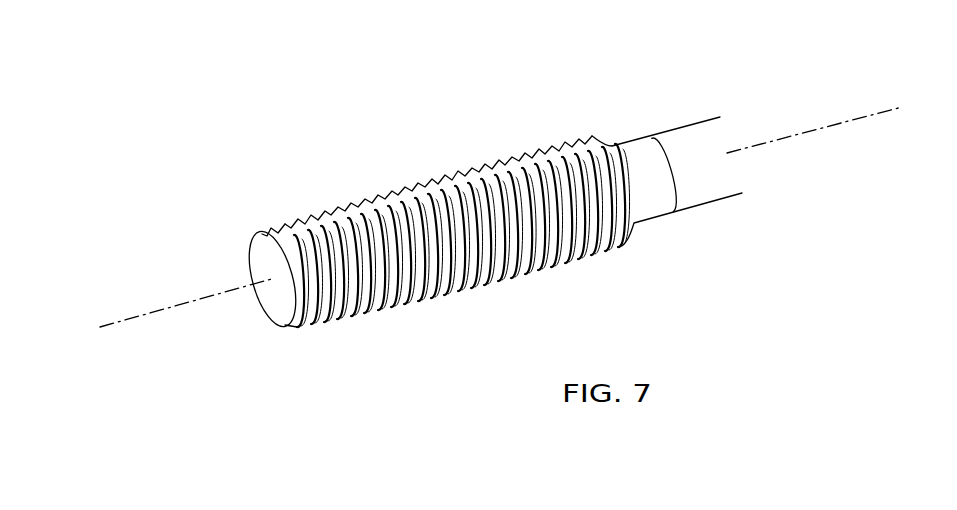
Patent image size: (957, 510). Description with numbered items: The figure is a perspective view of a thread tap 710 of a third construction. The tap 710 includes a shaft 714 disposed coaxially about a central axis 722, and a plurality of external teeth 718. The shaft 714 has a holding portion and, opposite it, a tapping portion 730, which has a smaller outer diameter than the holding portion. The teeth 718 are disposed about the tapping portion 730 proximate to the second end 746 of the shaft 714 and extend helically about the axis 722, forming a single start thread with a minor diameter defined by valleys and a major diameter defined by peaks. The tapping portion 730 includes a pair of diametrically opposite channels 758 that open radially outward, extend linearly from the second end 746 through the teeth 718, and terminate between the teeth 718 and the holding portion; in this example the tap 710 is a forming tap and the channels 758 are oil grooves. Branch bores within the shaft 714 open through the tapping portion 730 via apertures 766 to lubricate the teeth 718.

The thread tap 710 is at (417, 69).
The shaft 714 is at (708, 180).
The external teeth 718 is at (387, 192).
The central axis 722 is at (847, 128).
The tapping portion 730 is at (493, 283).
The second end 746 is at (270, 300).
The channels 758 is at (468, 185).
The apertures 766 is at (290, 226).